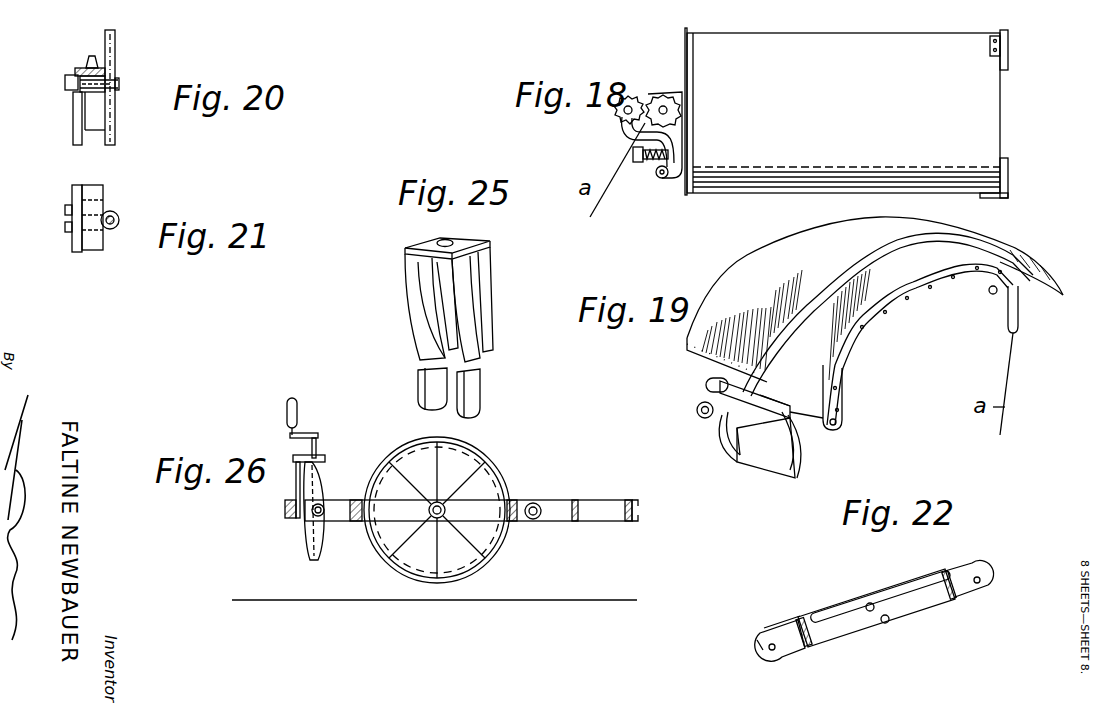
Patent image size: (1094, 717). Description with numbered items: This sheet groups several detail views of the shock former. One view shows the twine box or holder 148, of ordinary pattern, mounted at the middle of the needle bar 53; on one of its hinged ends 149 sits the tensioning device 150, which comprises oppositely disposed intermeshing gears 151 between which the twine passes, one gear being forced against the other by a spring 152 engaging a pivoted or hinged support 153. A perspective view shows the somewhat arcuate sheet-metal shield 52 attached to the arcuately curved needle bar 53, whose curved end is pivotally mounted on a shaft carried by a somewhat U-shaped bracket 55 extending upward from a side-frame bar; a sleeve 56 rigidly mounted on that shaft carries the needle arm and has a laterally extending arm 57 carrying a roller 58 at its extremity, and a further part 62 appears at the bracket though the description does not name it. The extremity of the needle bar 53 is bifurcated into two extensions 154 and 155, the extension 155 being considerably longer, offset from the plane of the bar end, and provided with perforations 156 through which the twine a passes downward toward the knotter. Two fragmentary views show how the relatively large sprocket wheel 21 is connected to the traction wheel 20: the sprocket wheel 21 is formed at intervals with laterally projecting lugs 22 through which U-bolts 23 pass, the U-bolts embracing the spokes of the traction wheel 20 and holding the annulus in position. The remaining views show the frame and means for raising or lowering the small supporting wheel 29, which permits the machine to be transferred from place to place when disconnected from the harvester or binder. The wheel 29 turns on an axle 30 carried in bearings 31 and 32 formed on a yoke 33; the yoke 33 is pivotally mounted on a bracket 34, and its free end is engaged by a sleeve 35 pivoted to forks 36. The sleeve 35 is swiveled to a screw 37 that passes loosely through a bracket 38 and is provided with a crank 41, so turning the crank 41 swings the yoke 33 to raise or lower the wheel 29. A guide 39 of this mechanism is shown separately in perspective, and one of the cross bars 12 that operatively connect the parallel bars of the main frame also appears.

In FIG. 26, the cross bars 12 is at (638, 512).
In FIG. 20, the traction wheel 20 is at (113, 62).
In FIG. 21, the traction wheel 20 is at (118, 214).
In FIG. 20, the sprocket wheel 21 is at (78, 70).
In FIG. 21, the sprocket wheel 21 is at (93, 196).
In FIG. 20, the laterally projecting lugs 22 is at (86, 94).
In FIG. 20, the U-bolts 23 is at (119, 83).
In FIG. 26, the small supporting wheel 29 is at (380, 558).
In FIG. 26, the axle 30 is at (430, 515).
In FIG. 22, the bearing 31 is at (887, 624).
In FIG. 22, the bearing 32 is at (868, 604).
In FIG. 26, the yoke 33 is at (392, 505).
In FIG. 22, the yoke 33 is at (842, 608).
In FIG. 26, the bracket 34 is at (562, 523).
In FIG. 22, the sleeve 35 is at (758, 642).
In FIG. 26, the forks 36 is at (310, 515).
In FIG. 22, the forks 36 is at (775, 632).
In FIG. 26, the screw 37 is at (318, 450).
In FIG. 26, the bracket 38 is at (296, 482).
In FIG. 25, the guide 39 is at (457, 396).
In FIG. 26, the guide 39 is at (318, 549).
In FIG. 26, the crank 41 is at (300, 412).
In FIG. 19, the shield 52 is at (770, 263).
In FIG. 19, the needle bar 53 is at (845, 282).
In FIG. 19, the bracket 55 is at (722, 438).
In FIG. 19, the sleeve 56 is at (732, 392).
In FIG. 19, the laterally extending arm 57 is at (709, 386).
In FIG. 19, the roller 58 is at (698, 412).
In FIG. 19, the block 62 is at (740, 462).
In FIG. 18, the twine holder 148 is at (847, 114).
In FIG. 18, the hinged ends 149 is at (687, 183).
In FIG. 18, the tensioning device 150 is at (675, 137).
In FIG. 18, the intermeshing gears 151 is at (628, 96).
In FIG. 18, the spring 152 is at (655, 160).
In FIG. 18, the hinged support 153 is at (626, 128).
In FIG. 19, the extension 154 is at (989, 292).
In FIG. 19, the extension 155 is at (1015, 310).
In FIG. 19, the perforations 156 is at (1013, 335).